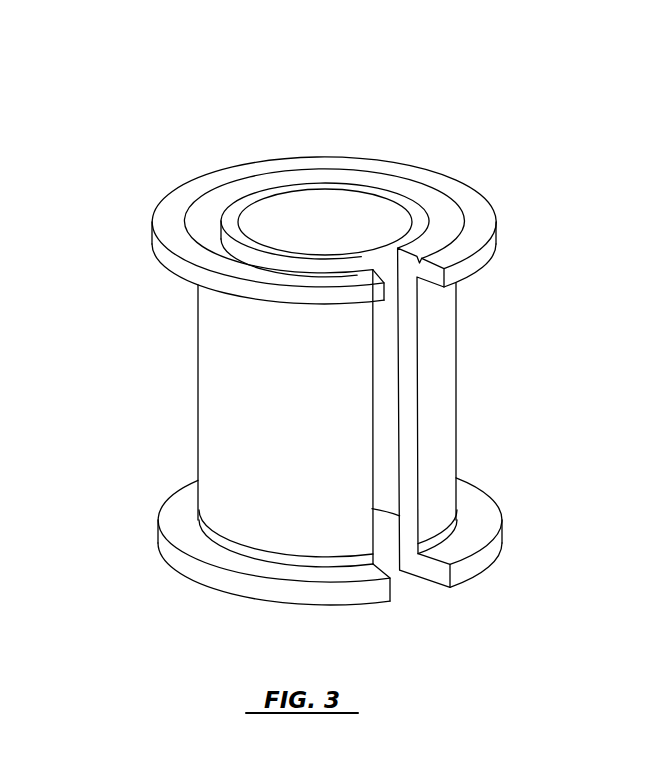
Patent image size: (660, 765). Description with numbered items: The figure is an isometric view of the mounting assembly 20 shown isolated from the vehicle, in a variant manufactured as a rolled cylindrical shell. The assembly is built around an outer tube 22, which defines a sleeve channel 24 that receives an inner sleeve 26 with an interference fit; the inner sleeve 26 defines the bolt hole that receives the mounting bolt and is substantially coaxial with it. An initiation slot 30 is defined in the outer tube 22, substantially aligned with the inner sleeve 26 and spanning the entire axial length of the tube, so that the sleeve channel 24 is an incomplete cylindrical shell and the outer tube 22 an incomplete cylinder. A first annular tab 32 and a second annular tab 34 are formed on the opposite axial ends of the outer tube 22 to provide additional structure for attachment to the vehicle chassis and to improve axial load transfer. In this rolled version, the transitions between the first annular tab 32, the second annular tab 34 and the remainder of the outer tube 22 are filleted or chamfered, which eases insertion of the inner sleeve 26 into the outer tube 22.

The mounting assembly 20 is at (426, 144).
The outer tube 22 is at (430, 338).
The sleeve channel 24 is at (221, 247).
The inner sleeve 26 is at (288, 192).
The initiation slot 30 is at (393, 290).
The first annular tab 32 is at (160, 543).
The second annular tab 34 is at (178, 263).